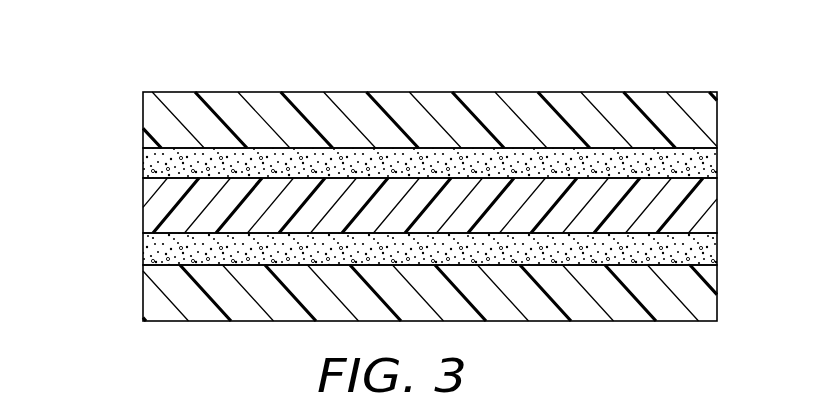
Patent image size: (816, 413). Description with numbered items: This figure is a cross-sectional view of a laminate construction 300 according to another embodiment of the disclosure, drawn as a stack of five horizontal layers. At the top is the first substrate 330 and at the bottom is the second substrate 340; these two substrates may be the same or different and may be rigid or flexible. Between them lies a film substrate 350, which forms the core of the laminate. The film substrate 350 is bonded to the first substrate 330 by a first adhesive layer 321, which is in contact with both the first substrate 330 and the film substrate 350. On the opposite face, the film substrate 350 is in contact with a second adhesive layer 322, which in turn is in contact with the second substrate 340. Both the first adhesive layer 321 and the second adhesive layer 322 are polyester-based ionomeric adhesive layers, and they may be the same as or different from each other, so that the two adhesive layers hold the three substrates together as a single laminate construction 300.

The laminate construction 300 is at (655, 43).
The first substrate 330 is at (126, 122).
The first adhesive layer 321 is at (126, 167).
The film substrate 350 is at (126, 205).
The second adhesive layer 322 is at (126, 253).
The second substrate 340 is at (126, 300).